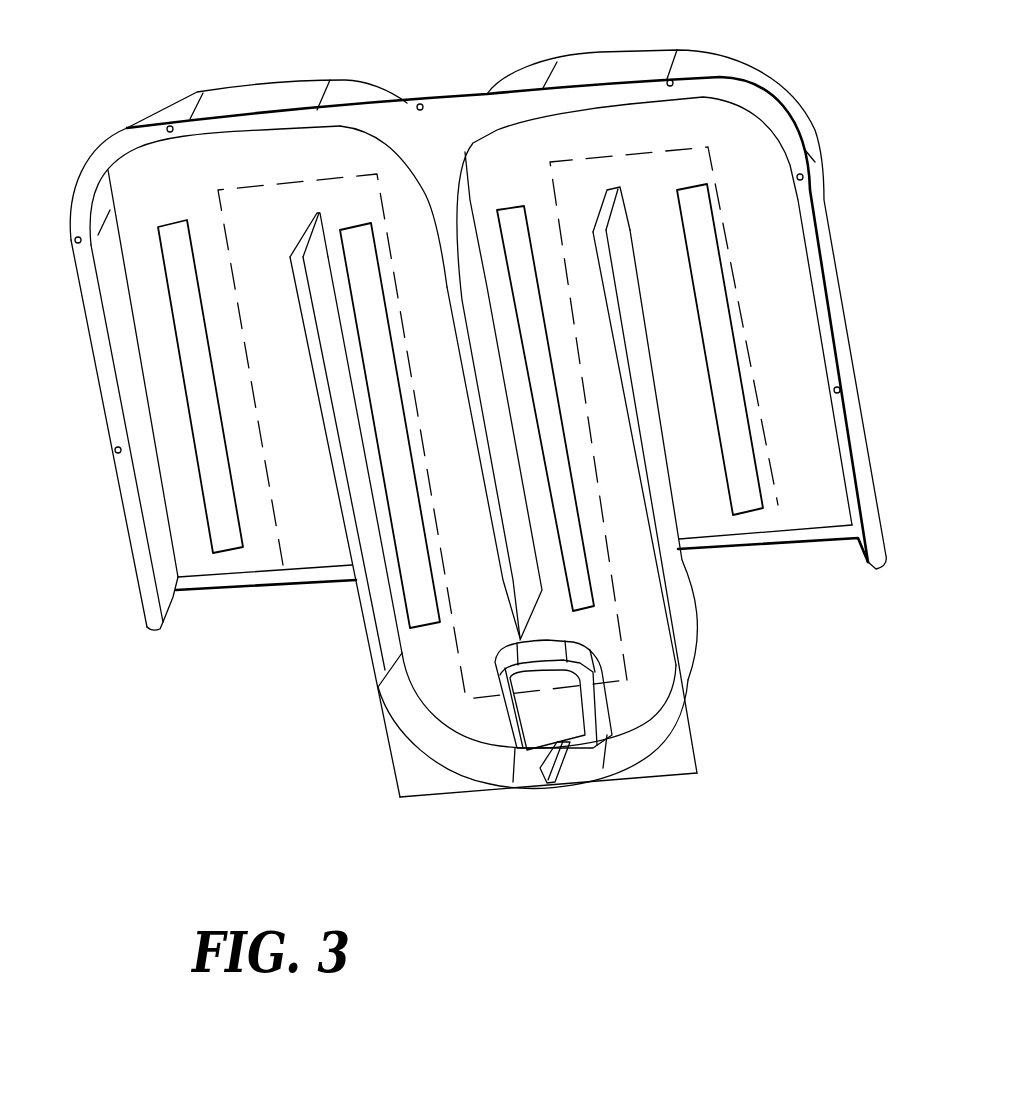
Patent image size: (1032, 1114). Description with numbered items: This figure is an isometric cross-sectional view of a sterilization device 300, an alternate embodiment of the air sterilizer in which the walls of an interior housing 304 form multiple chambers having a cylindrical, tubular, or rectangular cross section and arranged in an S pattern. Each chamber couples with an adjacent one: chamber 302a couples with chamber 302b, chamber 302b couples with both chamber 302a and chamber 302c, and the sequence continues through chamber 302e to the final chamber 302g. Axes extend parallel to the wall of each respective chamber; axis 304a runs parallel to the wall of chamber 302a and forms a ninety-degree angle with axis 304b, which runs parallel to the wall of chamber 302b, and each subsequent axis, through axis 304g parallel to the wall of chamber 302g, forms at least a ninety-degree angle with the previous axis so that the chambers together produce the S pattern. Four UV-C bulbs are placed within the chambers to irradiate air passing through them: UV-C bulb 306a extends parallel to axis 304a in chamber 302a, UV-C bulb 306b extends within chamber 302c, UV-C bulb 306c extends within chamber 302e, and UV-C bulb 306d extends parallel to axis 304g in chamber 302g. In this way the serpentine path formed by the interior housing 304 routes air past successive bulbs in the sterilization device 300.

The sterilization device 300 is at (244, 68).
The interior housing 304 is at (127, 157).
The chamber 302a is at (168, 505).
The chamber 302b is at (355, 166).
The chamber 302c is at (433, 211).
The chamber 302e is at (667, 704).
The chamber 302g is at (802, 221).
The axis 304a is at (285, 585).
The axis 304b is at (290, 182).
The axis 304g is at (767, 453).
The UV-C bulb 306a is at (176, 353).
The UV-C bulb 306b is at (414, 627).
The UV-C bulb 306c is at (600, 613).
The UV-C bulb 306d is at (753, 510).